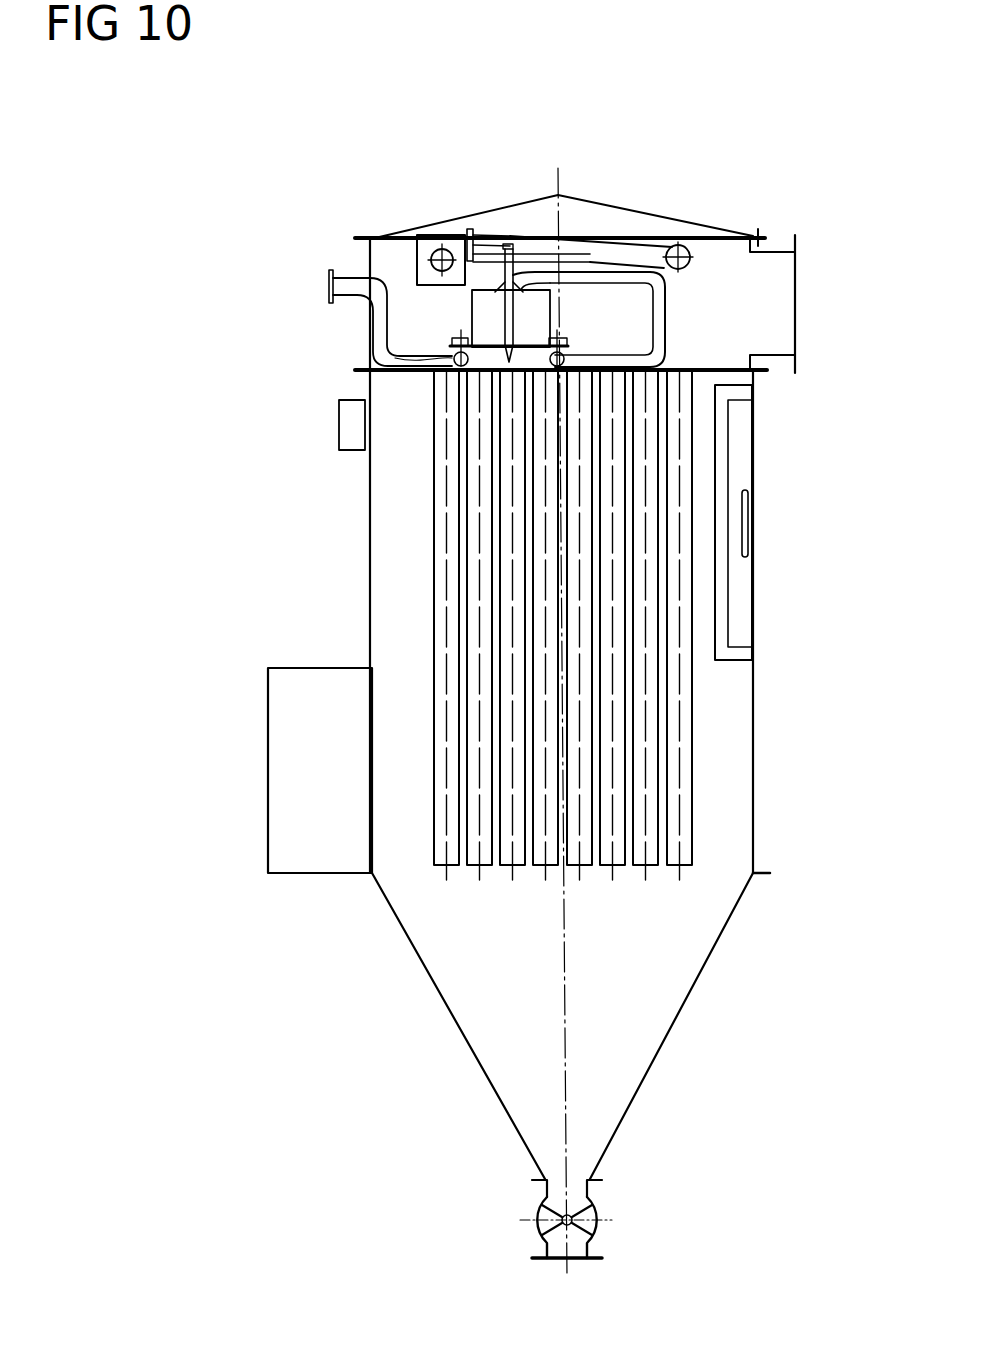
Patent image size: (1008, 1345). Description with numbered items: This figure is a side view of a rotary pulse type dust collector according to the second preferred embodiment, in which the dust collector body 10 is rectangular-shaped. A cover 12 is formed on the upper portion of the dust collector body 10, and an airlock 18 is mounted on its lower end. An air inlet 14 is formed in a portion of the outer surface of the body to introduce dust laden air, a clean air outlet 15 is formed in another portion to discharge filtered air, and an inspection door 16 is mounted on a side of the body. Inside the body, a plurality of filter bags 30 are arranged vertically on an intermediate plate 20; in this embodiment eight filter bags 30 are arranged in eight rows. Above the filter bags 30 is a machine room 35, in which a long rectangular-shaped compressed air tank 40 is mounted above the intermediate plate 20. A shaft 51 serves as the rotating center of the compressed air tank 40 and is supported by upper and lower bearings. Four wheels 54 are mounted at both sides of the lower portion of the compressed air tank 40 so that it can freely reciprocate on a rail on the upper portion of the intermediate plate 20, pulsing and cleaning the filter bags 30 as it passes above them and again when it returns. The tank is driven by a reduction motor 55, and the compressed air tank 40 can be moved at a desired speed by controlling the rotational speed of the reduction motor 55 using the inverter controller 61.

The dust collector body 10 is at (722, 790).
The cover 12 is at (630, 208).
The air inlet 14 is at (292, 780).
The clean air outlet 15 is at (780, 304).
The inspection door 16 is at (740, 592).
The airlock 18 is at (547, 1235).
The intermediate plate 20 is at (762, 372).
The filter bags 30 is at (688, 722).
The machine room 35 is at (712, 355).
The compressed air tank 40 is at (541, 335).
The shaft 51 is at (516, 293).
The wheels 54 is at (398, 352).
The reduction motor 55 is at (447, 245).
The inverter controller 61 is at (345, 430).